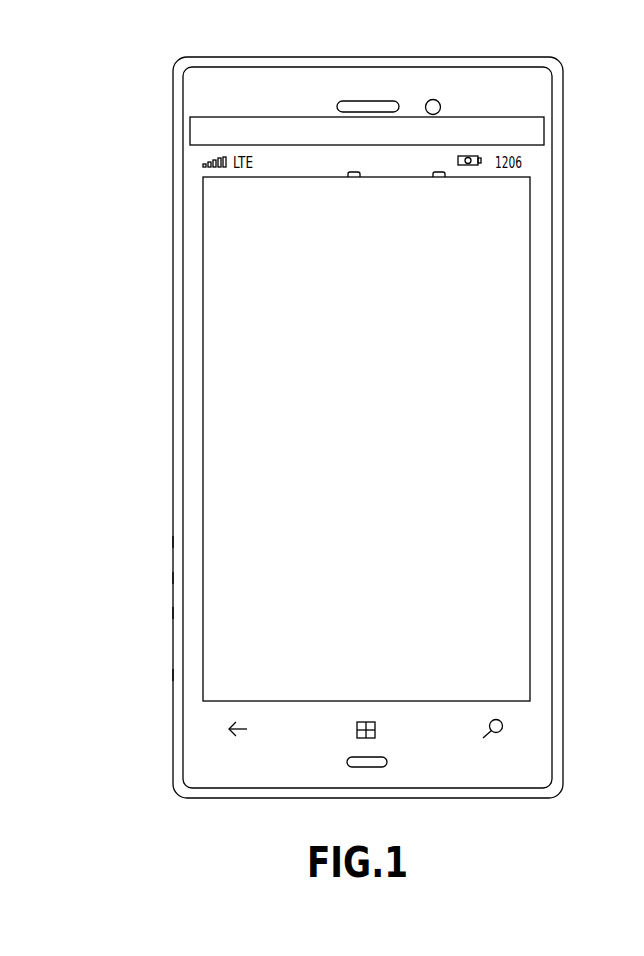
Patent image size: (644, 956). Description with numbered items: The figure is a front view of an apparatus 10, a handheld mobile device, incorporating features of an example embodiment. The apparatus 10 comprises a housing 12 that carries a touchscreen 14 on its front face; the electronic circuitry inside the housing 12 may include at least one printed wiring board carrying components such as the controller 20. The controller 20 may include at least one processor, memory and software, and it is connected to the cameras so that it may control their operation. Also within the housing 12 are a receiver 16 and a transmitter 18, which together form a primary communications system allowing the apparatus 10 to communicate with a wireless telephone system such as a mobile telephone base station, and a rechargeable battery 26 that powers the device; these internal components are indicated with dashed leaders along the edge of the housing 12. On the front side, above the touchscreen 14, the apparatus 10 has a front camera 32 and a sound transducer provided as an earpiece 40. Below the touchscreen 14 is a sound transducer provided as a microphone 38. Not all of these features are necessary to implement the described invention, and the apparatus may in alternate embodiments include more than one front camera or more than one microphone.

The apparatus 10 is at (128, 122).
The housing 12 is at (173, 362).
The touchscreen 14 is at (238, 493).
The receiver 16 is at (171, 542).
The transmitter 18 is at (171, 578).
The controller 20 is at (171, 613).
The rechargeable battery 26 is at (171, 675).
The front camera 32 is at (436, 102).
The microphone 38 is at (372, 767).
The earpiece 40 is at (355, 100).